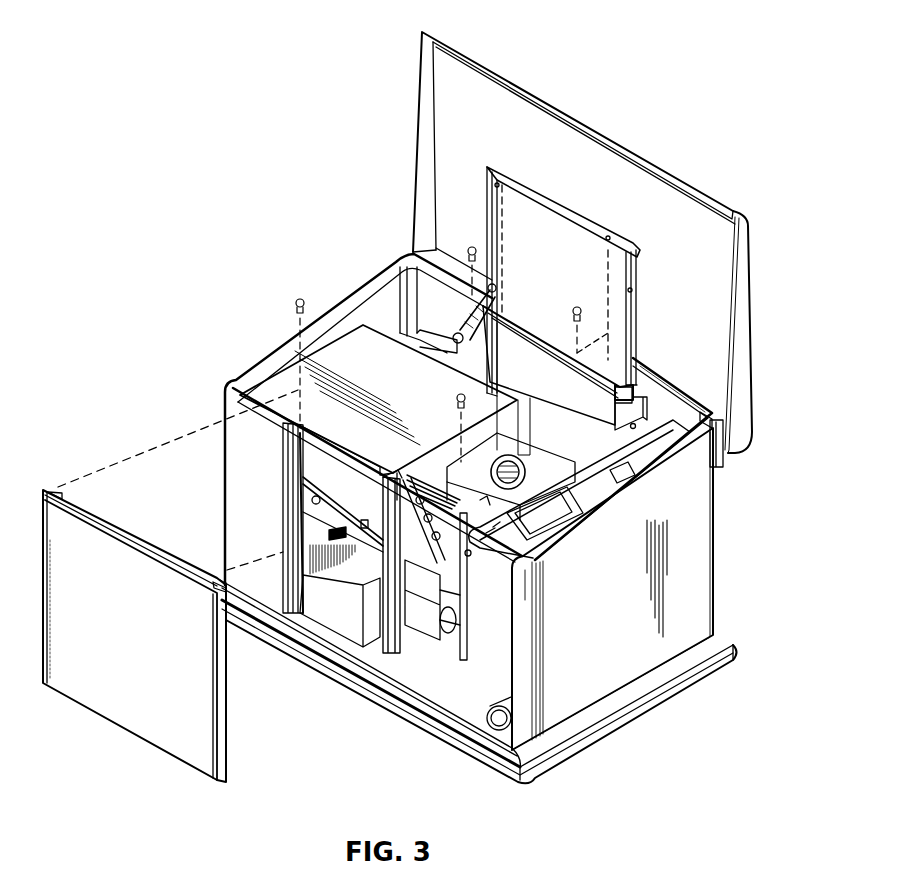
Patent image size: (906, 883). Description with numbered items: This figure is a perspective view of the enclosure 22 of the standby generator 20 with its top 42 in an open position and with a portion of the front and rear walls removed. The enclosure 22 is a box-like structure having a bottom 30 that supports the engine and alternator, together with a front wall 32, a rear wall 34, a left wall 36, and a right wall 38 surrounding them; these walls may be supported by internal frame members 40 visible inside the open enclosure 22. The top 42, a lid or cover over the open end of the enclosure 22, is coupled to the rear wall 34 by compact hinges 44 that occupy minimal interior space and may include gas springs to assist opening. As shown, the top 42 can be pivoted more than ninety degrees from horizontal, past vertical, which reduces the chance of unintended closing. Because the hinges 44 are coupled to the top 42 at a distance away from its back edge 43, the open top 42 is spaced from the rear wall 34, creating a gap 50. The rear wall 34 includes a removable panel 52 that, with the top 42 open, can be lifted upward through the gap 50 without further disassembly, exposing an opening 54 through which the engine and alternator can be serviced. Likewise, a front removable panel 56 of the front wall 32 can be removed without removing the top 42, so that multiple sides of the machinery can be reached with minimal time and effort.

The standby generator 20 is at (198, 86).
The enclosure 22 is at (737, 164).
The bottom 30 is at (312, 645).
The front wall 32 is at (493, 712).
The rear wall 34 is at (714, 570).
The left wall 36 is at (224, 412).
The right wall 38 is at (702, 618).
The internal frame members 40 is at (386, 645).
The top 42 is at (457, 123).
The back edge 43 is at (710, 460).
The hinges 44 is at (460, 317).
The gap 50 is at (707, 416).
The removable panel 52 is at (515, 245).
The opening 54 is at (520, 357).
The front removable panel 56 is at (122, 717).